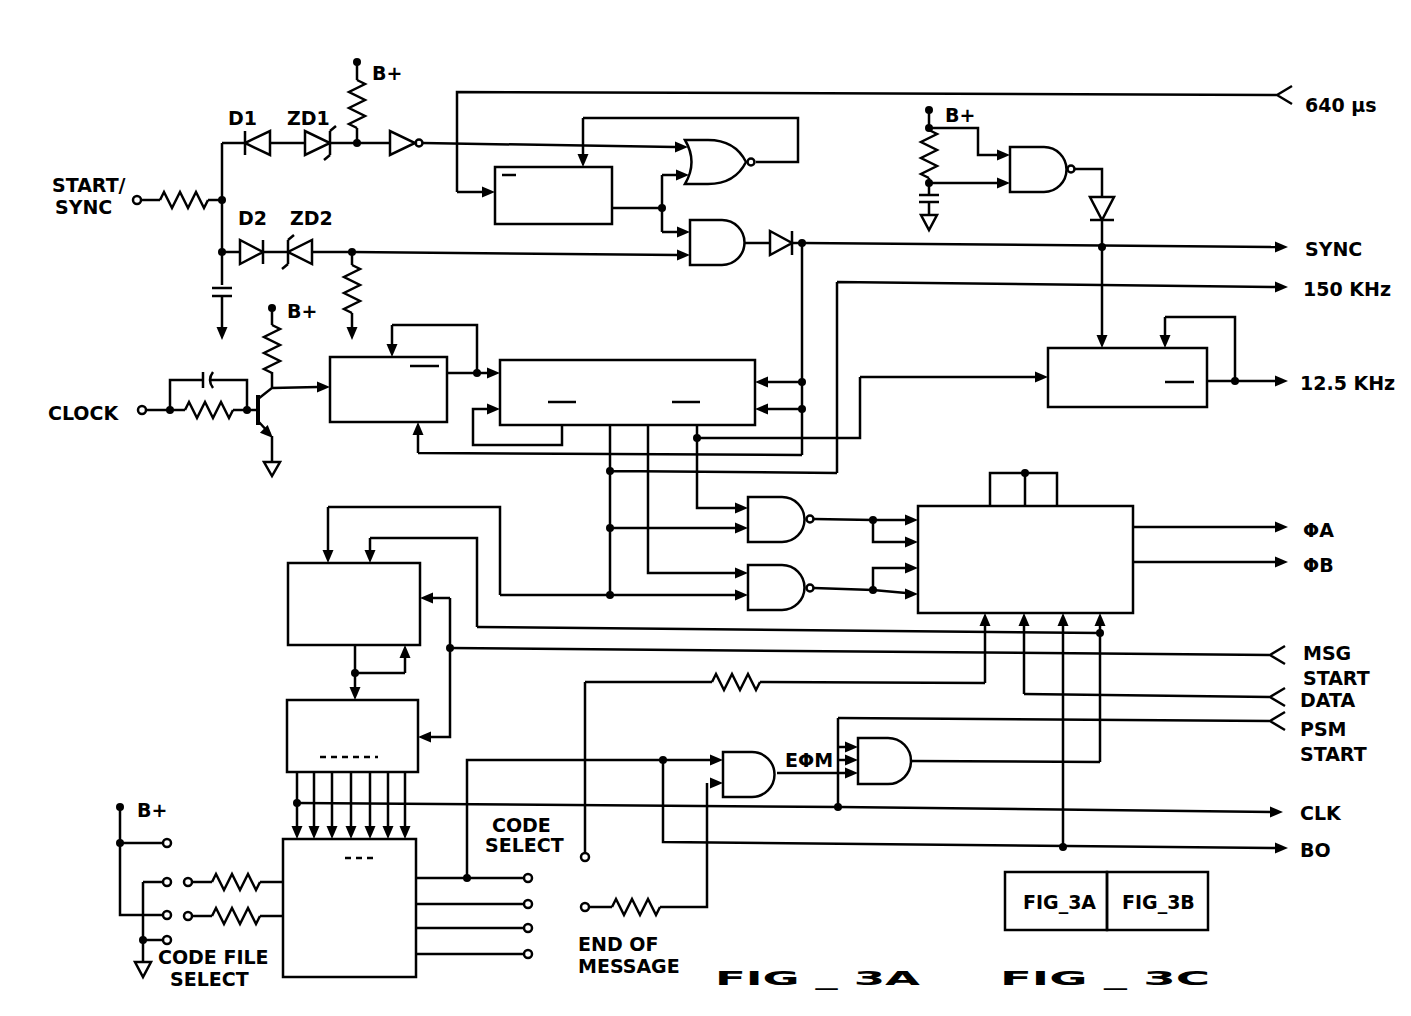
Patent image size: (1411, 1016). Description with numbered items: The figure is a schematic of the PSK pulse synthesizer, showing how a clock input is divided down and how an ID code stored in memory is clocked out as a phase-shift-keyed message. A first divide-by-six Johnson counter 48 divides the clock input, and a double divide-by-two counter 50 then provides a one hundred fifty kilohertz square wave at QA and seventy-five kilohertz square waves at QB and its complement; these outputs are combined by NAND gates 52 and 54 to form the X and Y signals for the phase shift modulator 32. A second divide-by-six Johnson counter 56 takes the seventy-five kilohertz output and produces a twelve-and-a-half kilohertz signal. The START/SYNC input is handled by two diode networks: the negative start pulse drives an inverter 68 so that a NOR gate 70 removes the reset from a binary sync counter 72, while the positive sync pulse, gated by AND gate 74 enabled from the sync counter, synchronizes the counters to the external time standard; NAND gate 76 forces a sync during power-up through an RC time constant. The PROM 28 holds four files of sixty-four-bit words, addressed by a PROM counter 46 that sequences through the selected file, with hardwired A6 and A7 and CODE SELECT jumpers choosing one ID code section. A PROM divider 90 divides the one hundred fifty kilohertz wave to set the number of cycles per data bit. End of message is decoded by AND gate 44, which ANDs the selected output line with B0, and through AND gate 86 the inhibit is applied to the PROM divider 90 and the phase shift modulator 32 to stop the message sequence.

The PROM 28 is at (283, 839).
The phase shift modulator 32 is at (1135, 585).
The AND gate 44 is at (740, 752).
The PROM counter 46 is at (287, 742).
The first divide-by-six Johnson counter 48 is at (366, 423).
The double divide-by-two counter 50 is at (650, 360).
The NAND gate 52 is at (803, 567).
The NAND gate 54 is at (803, 500).
The second divide-by-six Johnson counter 56 is at (1178, 408).
The inverter 68 is at (412, 122).
The NOR gate 70 is at (728, 182).
The binary sync counter 72 is at (491, 224).
The AND gate 74 is at (705, 266).
The NAND gate 76 is at (1066, 163).
The AND gate 86 is at (912, 746).
The PROM divider 90 is at (288, 611).